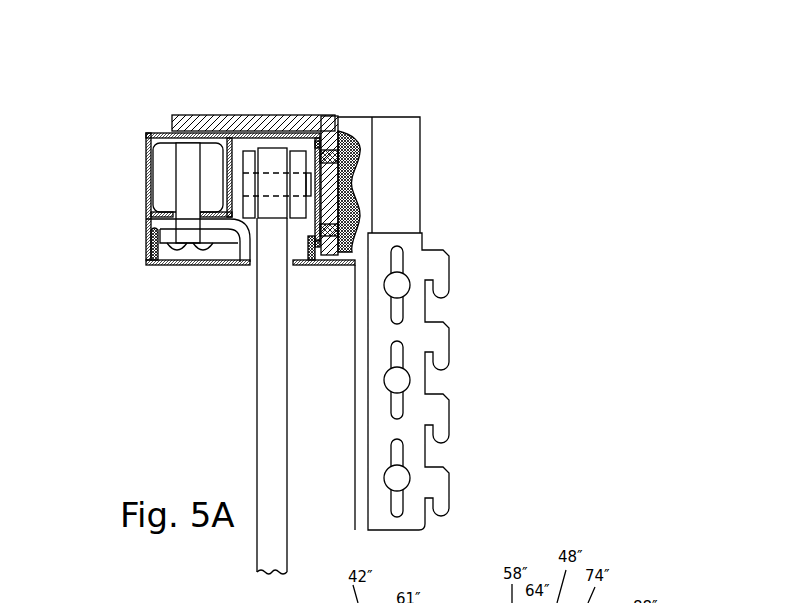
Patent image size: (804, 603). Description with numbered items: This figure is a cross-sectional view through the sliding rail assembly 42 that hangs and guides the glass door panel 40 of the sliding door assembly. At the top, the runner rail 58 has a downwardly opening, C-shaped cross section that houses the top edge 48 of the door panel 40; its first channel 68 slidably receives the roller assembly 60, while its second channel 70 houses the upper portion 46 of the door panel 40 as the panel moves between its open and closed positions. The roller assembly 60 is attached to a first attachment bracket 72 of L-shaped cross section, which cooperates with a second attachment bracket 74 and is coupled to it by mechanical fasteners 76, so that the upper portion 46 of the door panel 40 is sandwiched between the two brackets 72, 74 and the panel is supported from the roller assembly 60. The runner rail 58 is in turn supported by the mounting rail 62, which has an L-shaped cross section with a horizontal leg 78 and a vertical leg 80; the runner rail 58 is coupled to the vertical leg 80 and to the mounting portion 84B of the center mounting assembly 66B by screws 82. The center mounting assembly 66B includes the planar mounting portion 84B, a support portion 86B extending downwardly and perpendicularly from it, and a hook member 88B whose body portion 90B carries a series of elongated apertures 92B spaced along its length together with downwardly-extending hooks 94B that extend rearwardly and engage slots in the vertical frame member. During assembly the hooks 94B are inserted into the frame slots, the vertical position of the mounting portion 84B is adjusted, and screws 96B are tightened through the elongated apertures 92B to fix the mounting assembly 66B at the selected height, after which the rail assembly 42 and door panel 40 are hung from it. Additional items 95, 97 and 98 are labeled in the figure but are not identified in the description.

The glass door panel 40 is at (256, 352).
The sliding rail assembly 42 is at (195, 191).
The upper portion 46 is at (265, 308).
The top edge 48 is at (273, 148).
The runner rail 58 is at (238, 134).
The roller assembly 60 is at (147, 152).
The mounting rail 62 is at (332, 137).
The center mounting assembly 66B is at (433, 363).
The first channel 68 is at (163, 180).
The second channel 70 is at (231, 148).
The first attachment bracket 72 is at (241, 250).
The second attachment bracket 74 is at (317, 112).
The mechanical fasteners 76 is at (271, 196).
The horizontal leg 78 is at (250, 150).
The vertical leg 80 is at (350, 128).
The screws 82 is at (355, 138).
The mounting portion 84B is at (367, 170).
The support portion 86B is at (420, 197).
The hook member 88B is at (367, 383).
The body portion 90B is at (370, 423).
The elongated apertures 92B is at (396, 457).
The hooks 94B is at (450, 277).
The base plate 95 is at (172, 266).
The screws 96B is at (387, 480).
The clip 97 is at (160, 265).
The clip 98 is at (151, 243).